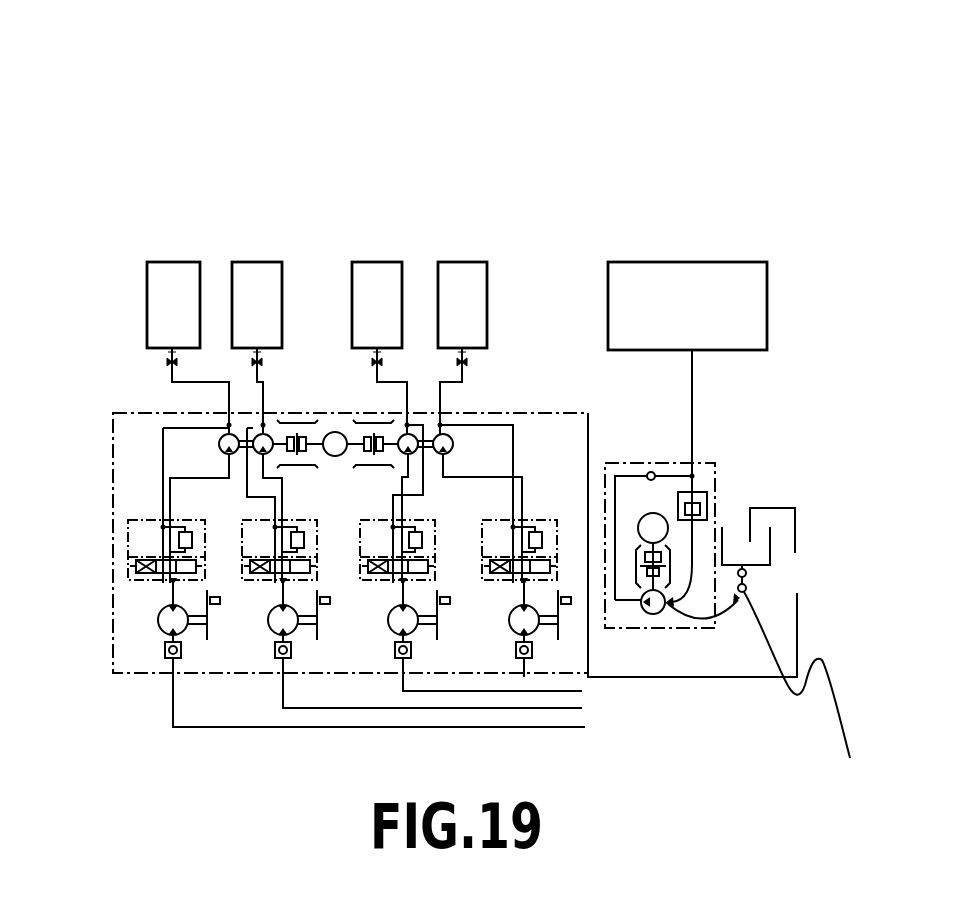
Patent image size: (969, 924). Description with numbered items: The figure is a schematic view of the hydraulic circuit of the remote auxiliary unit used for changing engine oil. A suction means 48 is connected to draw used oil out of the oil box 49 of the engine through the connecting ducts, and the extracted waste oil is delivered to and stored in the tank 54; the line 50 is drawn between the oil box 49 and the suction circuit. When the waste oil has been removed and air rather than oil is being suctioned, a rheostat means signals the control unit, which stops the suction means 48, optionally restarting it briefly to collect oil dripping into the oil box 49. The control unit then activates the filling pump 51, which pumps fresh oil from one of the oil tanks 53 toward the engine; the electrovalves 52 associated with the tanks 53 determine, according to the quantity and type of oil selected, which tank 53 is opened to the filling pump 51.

The suction means 48 is at (678, 560).
The oil box 49 is at (772, 550).
The return line 50 is at (813, 698).
The filling pump 51 is at (335, 428).
The valve units 52 is at (235, 521).
The supply containers 53 is at (452, 283).
The tank 54 is at (707, 293).